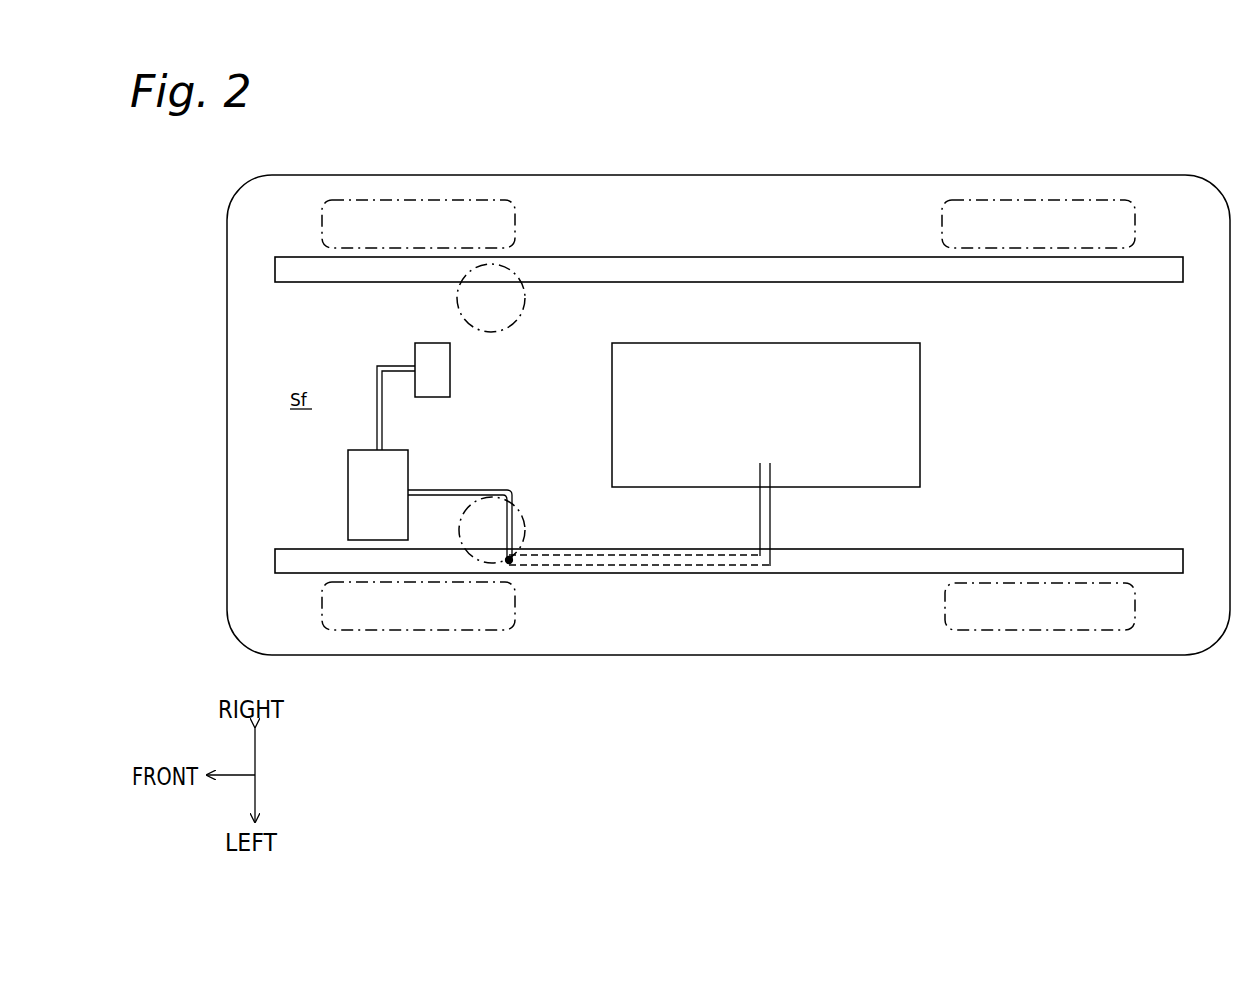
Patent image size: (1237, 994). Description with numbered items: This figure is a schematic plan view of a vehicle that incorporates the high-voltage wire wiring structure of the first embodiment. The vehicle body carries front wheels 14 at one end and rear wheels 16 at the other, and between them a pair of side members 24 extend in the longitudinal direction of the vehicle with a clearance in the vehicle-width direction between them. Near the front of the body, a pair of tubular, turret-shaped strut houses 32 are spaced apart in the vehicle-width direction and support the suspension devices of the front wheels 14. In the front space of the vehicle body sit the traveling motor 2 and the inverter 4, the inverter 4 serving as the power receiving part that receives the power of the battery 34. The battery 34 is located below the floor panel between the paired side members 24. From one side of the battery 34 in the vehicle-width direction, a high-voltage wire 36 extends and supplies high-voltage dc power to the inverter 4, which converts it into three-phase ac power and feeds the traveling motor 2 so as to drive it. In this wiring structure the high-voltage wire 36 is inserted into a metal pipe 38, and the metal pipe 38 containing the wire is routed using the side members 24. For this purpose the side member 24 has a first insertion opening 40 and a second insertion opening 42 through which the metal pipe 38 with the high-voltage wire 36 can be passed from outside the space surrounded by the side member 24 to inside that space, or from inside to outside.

The traveling motor 2 is at (422, 343).
The inverter 4 is at (410, 468).
The front wheels 14 is at (433, 198).
The rear wheels 16 is at (1055, 198).
The side members 24 is at (753, 257).
The strut houses 32 is at (522, 310).
The battery 34 is at (845, 343).
The high-voltage wire 36 is at (480, 490).
The metal pipe 38 is at (760, 518).
The first insertion opening 40 is at (770, 540).
The second insertion opening 42 is at (512, 562).